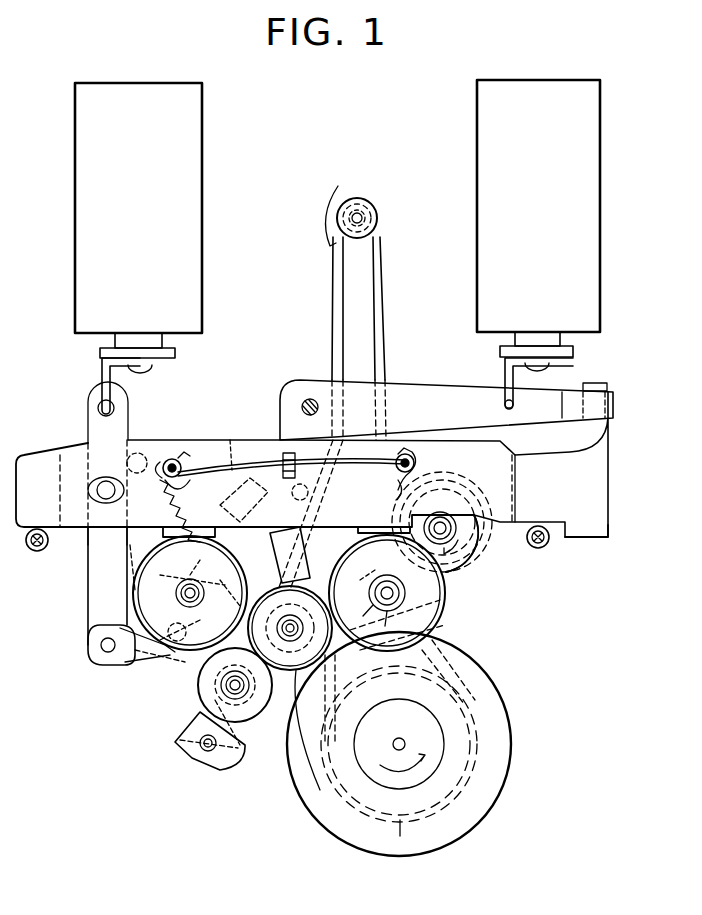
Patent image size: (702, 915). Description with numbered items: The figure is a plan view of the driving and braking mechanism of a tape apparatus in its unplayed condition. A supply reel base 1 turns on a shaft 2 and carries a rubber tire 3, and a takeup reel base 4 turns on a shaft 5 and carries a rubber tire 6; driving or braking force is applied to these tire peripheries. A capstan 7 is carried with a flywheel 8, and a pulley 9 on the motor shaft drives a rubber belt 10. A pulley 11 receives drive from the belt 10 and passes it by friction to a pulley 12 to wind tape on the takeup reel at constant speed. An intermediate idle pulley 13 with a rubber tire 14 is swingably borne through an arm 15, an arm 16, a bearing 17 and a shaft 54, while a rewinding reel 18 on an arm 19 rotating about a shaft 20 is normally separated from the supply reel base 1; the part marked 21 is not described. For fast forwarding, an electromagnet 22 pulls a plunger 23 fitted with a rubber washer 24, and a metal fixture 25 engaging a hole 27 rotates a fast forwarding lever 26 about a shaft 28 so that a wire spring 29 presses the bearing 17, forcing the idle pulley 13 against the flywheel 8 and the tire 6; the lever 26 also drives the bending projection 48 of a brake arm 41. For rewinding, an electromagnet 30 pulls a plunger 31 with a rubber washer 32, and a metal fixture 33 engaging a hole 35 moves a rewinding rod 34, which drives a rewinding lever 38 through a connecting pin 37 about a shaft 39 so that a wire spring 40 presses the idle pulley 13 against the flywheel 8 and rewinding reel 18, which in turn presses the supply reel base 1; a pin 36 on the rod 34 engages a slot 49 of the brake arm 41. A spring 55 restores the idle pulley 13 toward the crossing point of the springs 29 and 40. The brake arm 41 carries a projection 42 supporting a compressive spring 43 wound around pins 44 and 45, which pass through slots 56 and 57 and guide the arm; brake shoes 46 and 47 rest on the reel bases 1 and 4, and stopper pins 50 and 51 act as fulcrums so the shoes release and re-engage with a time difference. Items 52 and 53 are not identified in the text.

The supply reel base 1 is at (165, 558).
The shaft for the supply reel base 2 is at (178, 595).
The rubber tire 3 is at (128, 608).
The takeup reel base 4 is at (440, 612).
The shaft of the takeup reel base 5 is at (380, 612).
The rubber tire 6 is at (448, 634).
The capstan 7 is at (397, 740).
The flywheel 8 is at (498, 800).
The pulley 9 is at (357, 198).
The rubber belt 10 is at (382, 322).
The pulley 11 is at (492, 560).
The pulley 12 is at (474, 580).
The intermediate idle pulley 13 is at (286, 690).
The rubber tire 14 is at (300, 672).
The arm 15 is at (255, 545).
The arm 16 is at (256, 592).
The bearing 17 is at (361, 605).
The rewinding reel 18 is at (242, 722).
The arm 19 is at (232, 752).
The shaft 20 is at (210, 752).
The bracket 21 is at (196, 762).
The electromagnet 22 is at (480, 154).
The plunger 23 is at (562, 339).
The rubber washer 24 is at (576, 356).
The metal fixture 25 is at (504, 376).
The fast forwarding lever 26 is at (411, 392).
The hole 27 is at (500, 404).
The shaft 28 is at (310, 398).
The wire spring 29 is at (360, 571).
The electromagnet 30 is at (204, 155).
The plunger 31 is at (146, 338).
The rubber washer 32 is at (176, 353).
The metal fixture 33 is at (108, 380).
The rewinding rod 34 is at (92, 588).
The hole 35 is at (122, 410).
The pin 36 is at (90, 492).
The connecting pin 37 is at (112, 664).
The rewinding lever 38 is at (152, 658).
The shaft 39 is at (168, 680).
The wire spring 40 is at (200, 650).
The brake arm 41 is at (199, 446).
The projection 42 is at (289, 452).
The compressive spring 43 is at (240, 456).
The pin 44 is at (173, 458).
The pin 45 is at (416, 462).
The brake shoe 46 is at (176, 528).
The brake shoe 47 is at (378, 526).
The bending projection 48 is at (608, 386).
The slot 49 is at (110, 528).
The stopper pin 50 is at (46, 550).
The stopper pin 51 is at (548, 543).
The flange 52 is at (592, 533).
The lever 53 is at (242, 470).
The shaft 54 is at (188, 565).
The spring 55 is at (100, 474).
The slot 56 is at (182, 480).
The slot 57 is at (394, 484).